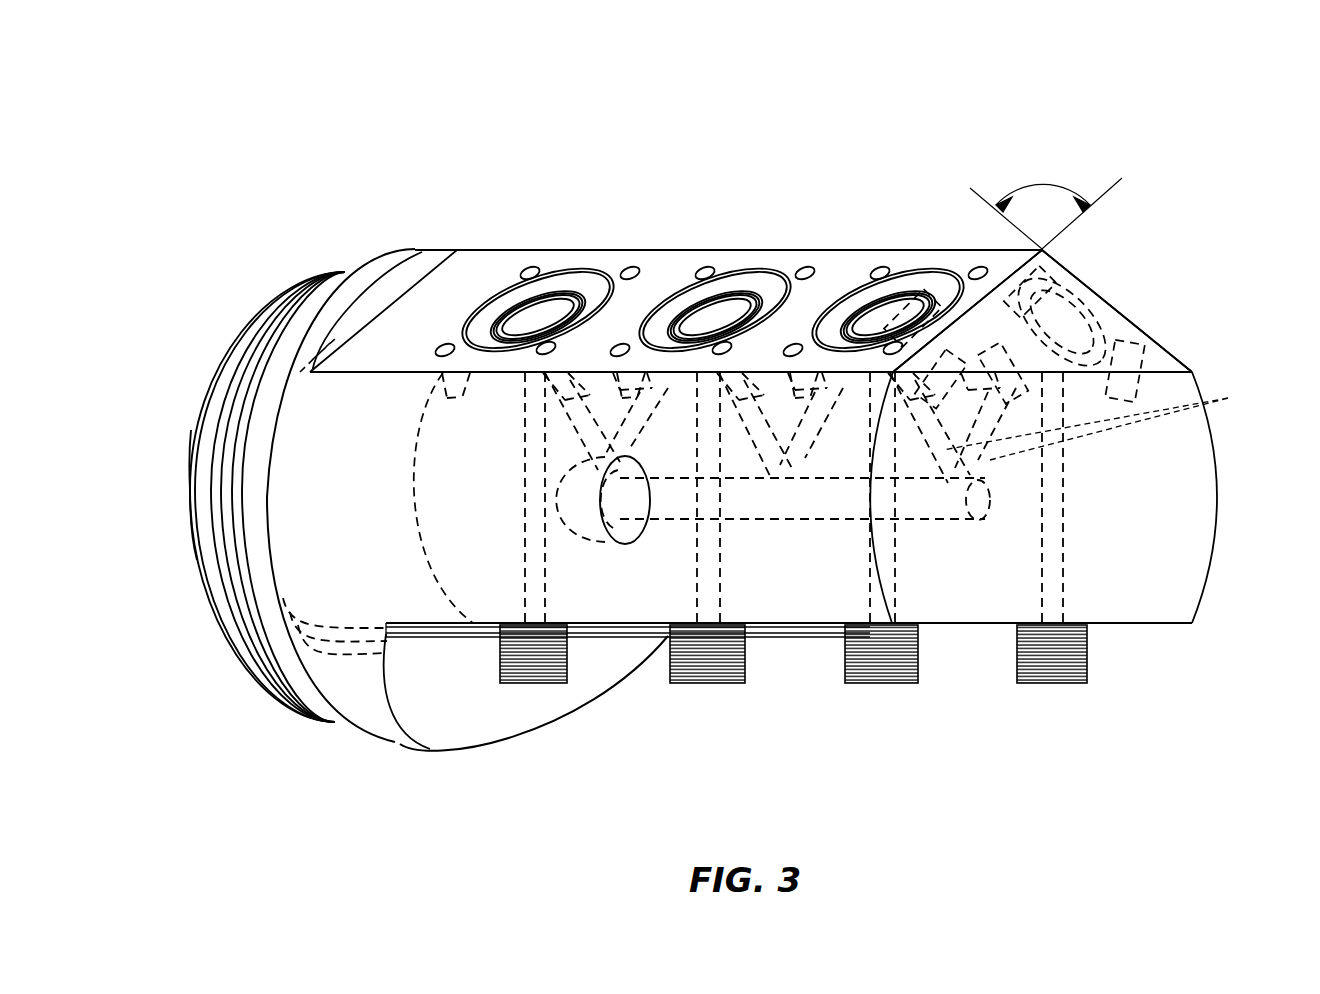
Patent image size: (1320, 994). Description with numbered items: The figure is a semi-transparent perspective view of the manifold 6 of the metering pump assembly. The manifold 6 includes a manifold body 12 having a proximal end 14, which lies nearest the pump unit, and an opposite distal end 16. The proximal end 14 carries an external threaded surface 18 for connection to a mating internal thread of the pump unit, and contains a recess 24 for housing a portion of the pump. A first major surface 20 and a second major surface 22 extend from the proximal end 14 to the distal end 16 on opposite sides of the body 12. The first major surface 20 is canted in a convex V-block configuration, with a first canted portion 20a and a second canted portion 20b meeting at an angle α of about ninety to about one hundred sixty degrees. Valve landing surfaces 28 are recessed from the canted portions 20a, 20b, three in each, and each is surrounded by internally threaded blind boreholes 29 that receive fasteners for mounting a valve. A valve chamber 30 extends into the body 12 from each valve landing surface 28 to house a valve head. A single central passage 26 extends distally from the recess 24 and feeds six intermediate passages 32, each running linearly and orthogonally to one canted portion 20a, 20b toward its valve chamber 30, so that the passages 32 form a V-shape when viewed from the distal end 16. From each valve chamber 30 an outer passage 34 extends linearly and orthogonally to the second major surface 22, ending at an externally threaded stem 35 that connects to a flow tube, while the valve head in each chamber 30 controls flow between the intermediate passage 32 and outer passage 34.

The manifold 6 is at (380, 140).
The manifold body 12 is at (478, 713).
The proximal end 14 is at (197, 432).
The distal end 16 is at (1195, 495).
The external threaded surface 18 is at (272, 300).
The first major surface 20 is at (667, 268).
The first canted portion 20a is at (836, 262).
The second canted portion 20b is at (1128, 313).
The second major surface 22 is at (795, 637).
The recess 24 is at (457, 562).
The central passage 26 is at (660, 519).
The valve landing surface 28 is at (765, 283).
The internally threaded blind borehole 29 is at (450, 345).
The valve chamber 30 is at (718, 318).
The intermediate passage 32 is at (1228, 400).
The outer passage 34 is at (887, 547).
The stem 35 is at (845, 660).